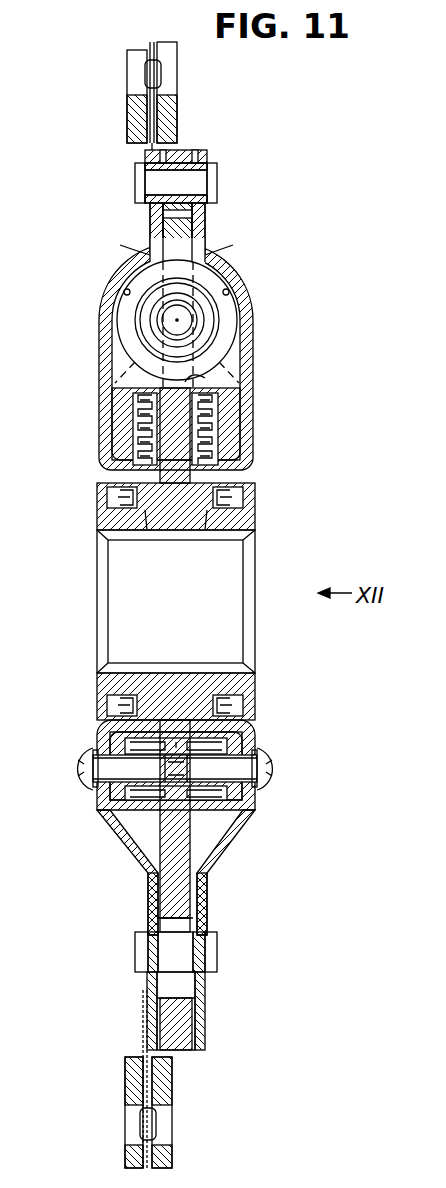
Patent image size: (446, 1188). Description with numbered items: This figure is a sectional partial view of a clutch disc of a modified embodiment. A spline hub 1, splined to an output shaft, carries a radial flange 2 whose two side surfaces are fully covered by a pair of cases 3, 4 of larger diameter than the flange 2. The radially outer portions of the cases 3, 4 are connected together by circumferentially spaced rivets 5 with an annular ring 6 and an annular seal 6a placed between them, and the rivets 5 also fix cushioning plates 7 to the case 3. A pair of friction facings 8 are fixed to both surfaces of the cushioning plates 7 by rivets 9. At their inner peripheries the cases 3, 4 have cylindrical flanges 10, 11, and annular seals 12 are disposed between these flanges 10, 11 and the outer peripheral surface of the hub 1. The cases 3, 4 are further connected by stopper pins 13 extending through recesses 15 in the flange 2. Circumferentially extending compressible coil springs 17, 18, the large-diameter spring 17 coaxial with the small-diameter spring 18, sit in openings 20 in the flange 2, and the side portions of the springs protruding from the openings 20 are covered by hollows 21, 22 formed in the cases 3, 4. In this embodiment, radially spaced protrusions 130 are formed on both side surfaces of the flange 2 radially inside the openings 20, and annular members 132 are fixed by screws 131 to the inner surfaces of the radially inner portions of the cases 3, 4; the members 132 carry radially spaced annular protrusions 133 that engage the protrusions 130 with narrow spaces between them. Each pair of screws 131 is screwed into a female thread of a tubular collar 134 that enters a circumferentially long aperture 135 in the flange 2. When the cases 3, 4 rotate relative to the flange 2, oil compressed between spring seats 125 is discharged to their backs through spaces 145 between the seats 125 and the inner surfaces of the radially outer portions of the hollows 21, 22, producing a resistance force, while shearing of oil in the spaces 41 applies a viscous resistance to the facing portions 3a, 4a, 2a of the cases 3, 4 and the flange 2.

The spline hub 1 is at (252, 521).
The radial flange 2 is at (206, 216).
The portion of flange 2a is at (172, 888).
The case 3 is at (106, 307).
The portion of case 3a is at (150, 918).
The case 4 is at (250, 300).
The portion of case 4a is at (205, 917).
The rivet 5 is at (137, 187).
The annular ring 6 is at (178, 152).
The annular seal 6a is at (185, 153).
The cushioning plate 7 is at (146, 158).
The friction facing 8 is at (160, 120).
The rivet 9 is at (149, 74).
The cylindrical flange 10 is at (145, 510).
The cylindrical flange 11 is at (207, 510).
The annular seal 12 is at (100, 503).
The stopper pin 13 is at (136, 955).
The recess 15 is at (190, 935).
The coil spring 17 is at (228, 339).
The coil spring 18 is at (206, 322).
The opening 20 is at (205, 380).
The hollow 21 is at (121, 285).
The hollow 22 is at (231, 285).
The space 41 is at (152, 897).
The spring seat 125 is at (118, 364).
The protrusion 130 is at (152, 420).
The screw 131 is at (78, 757).
The annular member 132 is at (122, 443).
The annular protrusion 133 is at (178, 482).
The tubular collar 134 is at (195, 790).
The aperture 135 is at (176, 735).
The space 145 is at (128, 245).